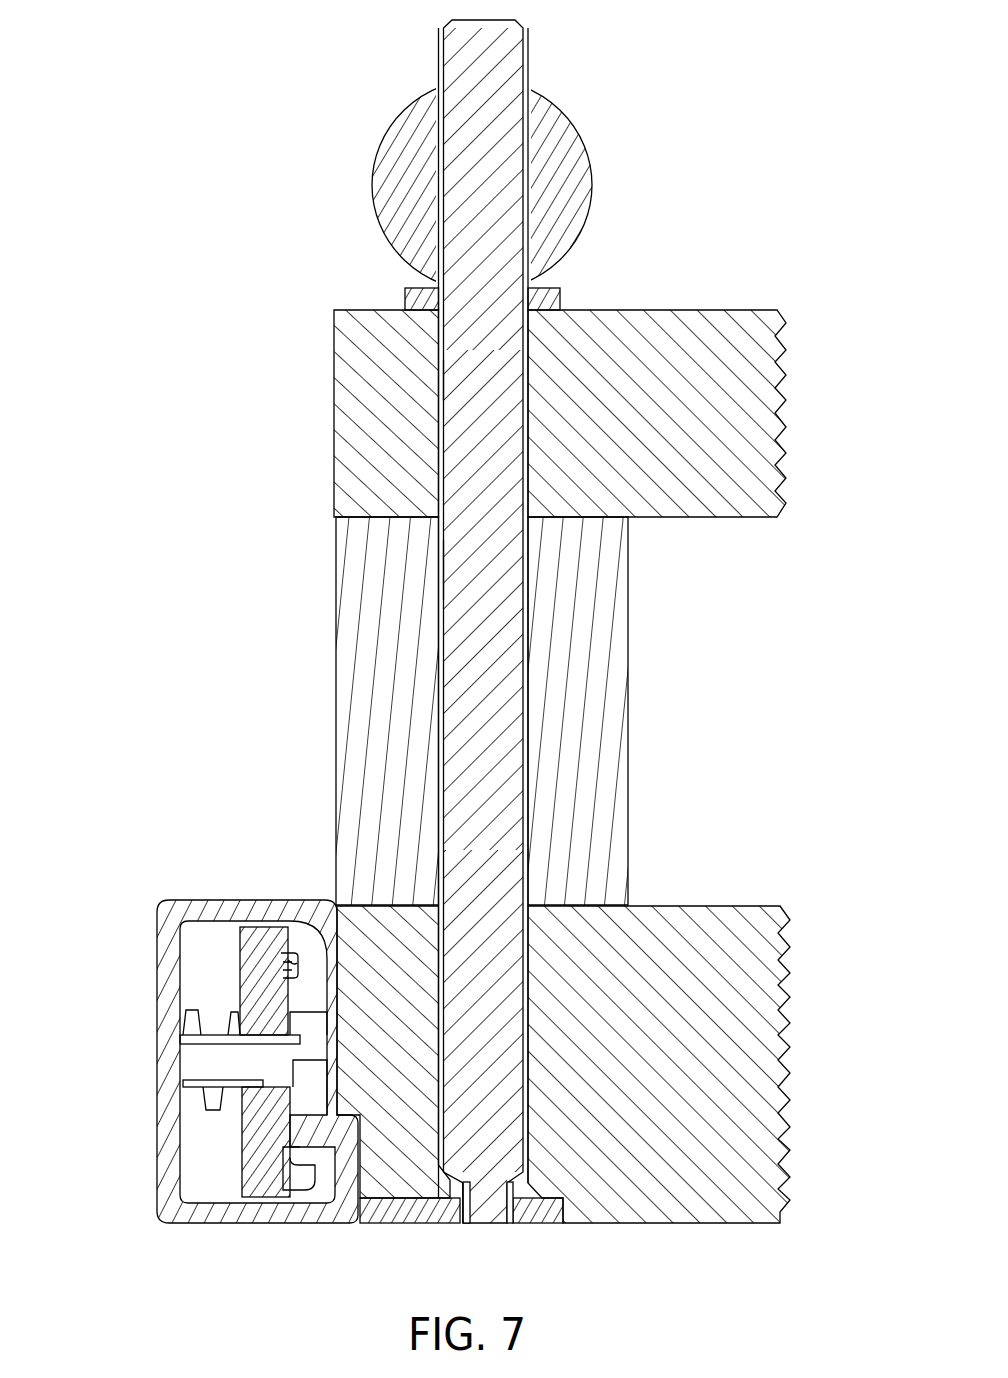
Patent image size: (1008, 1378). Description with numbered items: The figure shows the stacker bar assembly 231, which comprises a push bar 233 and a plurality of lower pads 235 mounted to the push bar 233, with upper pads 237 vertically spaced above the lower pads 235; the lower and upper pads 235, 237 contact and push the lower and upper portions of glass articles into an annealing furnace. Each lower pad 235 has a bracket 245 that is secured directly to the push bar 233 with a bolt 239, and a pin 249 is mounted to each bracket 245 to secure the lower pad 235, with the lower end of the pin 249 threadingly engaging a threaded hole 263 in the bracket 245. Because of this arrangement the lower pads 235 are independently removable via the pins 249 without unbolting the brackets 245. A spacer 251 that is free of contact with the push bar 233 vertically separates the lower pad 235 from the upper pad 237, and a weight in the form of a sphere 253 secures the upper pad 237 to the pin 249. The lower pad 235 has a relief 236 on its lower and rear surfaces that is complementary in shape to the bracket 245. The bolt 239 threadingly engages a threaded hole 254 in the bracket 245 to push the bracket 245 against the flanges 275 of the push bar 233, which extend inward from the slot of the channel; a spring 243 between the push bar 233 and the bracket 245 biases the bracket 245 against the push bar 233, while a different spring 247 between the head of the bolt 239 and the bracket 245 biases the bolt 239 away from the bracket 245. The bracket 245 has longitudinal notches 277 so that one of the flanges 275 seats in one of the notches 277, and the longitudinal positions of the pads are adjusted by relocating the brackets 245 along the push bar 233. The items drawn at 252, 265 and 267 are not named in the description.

The stacker bar assembly 231 is at (702, 185).
The push bar 233 is at (166, 931).
The lower pad 235 is at (757, 991).
The relief 236 is at (370, 1200).
The upper pad 237 is at (733, 387).
The bolt 239 is at (320, 977).
The spring 243 is at (196, 1022).
The bracket 245 is at (232, 1182).
The spring 247 is at (385, 1108).
The pin 249 is at (497, 50).
The spacer 251 is at (603, 647).
The washer 252 is at (415, 300).
The sphere 253 is at (400, 172).
The threaded hole 254 is at (260, 1080).
The threaded hole 263 is at (509, 1186).
The stem surface 265 is at (438, 548).
The stem surface 267 is at (438, 368).
The flange 275 is at (297, 963).
The longitudinal notch 277 is at (290, 968).